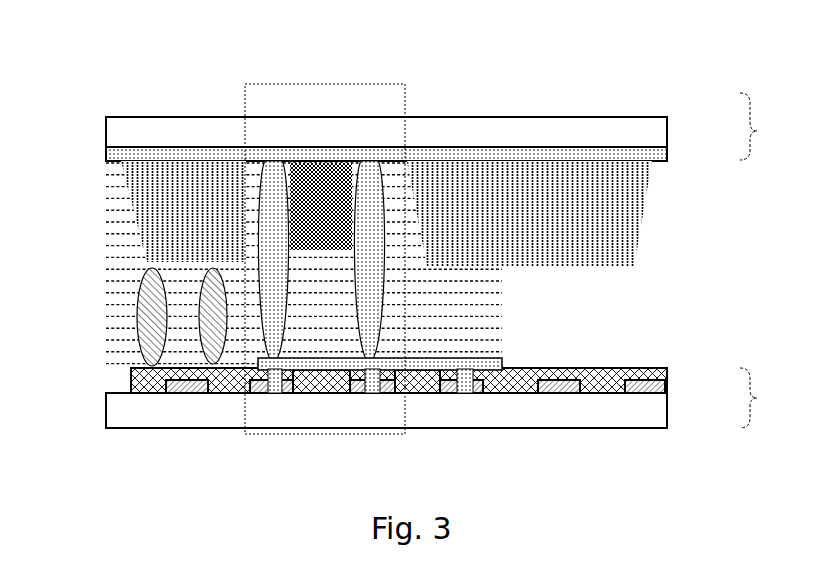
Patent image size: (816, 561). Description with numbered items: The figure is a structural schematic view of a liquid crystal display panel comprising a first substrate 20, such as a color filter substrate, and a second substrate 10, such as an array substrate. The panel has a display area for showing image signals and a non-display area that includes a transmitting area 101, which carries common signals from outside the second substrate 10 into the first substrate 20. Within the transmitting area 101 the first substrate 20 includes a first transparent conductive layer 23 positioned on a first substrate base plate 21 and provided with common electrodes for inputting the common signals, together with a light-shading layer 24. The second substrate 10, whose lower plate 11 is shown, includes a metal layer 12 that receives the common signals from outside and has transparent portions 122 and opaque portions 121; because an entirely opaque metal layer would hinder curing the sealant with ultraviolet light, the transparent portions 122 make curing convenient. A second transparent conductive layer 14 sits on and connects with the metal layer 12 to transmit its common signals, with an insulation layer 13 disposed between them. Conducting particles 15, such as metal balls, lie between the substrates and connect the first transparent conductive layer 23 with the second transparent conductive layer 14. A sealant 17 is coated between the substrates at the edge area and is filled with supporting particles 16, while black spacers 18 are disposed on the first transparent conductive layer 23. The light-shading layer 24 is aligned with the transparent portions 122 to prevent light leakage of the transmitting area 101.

The second substrate 10 is at (761, 398).
The first substrate 11 is at (669, 422).
The metal layer 12 is at (668, 386).
The insulation layer 13 is at (668, 370).
The second transparent conductive layer 14 is at (503, 363).
The conducting particles 15 is at (387, 334).
The supporting particles 16 is at (132, 288).
The sealant 17 is at (113, 230).
The spacers 18 is at (645, 218).
The first substrate 20 is at (763, 126).
The first substrate base plate 21 is at (668, 128).
The first transparent conductive layer 23 is at (668, 160).
The light-shading layer 24 is at (300, 162).
The transmitting area 101 is at (357, 84).
The opaque portions 121 is at (402, 396).
The transparent portions 122 is at (313, 394).